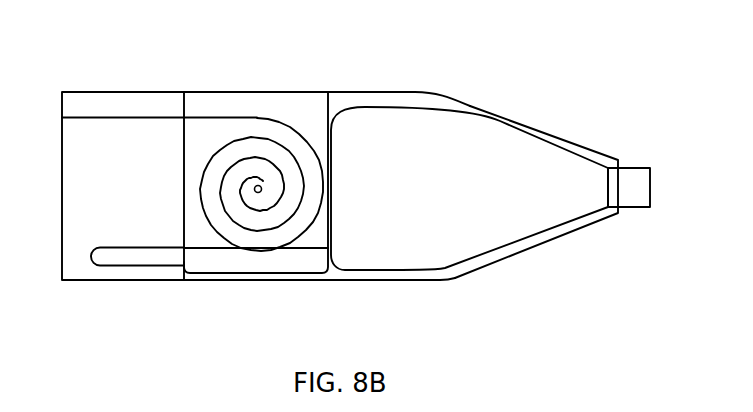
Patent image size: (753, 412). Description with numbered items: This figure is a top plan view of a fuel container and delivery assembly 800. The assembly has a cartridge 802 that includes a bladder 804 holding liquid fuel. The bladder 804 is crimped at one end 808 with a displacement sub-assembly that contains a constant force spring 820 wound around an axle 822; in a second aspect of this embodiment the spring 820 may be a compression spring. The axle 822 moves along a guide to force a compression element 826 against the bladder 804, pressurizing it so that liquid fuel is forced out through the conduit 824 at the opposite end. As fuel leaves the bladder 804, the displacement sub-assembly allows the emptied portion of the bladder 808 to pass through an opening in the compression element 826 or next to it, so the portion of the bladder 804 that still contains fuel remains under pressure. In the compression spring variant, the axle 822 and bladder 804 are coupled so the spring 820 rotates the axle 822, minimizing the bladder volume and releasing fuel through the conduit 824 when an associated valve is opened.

The fuel container and delivery assembly 800 is at (147, 36).
The cartridge 802 is at (127, 280).
The bladder 804 is at (493, 123).
The crimped end of the bladder 808 is at (121, 266).
The constant force spring 820 is at (280, 122).
The axle 822 is at (259, 192).
The conduit 824 is at (633, 168).
The compression element 826 is at (312, 112).